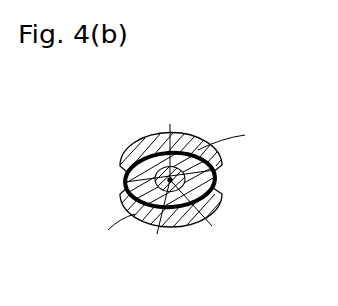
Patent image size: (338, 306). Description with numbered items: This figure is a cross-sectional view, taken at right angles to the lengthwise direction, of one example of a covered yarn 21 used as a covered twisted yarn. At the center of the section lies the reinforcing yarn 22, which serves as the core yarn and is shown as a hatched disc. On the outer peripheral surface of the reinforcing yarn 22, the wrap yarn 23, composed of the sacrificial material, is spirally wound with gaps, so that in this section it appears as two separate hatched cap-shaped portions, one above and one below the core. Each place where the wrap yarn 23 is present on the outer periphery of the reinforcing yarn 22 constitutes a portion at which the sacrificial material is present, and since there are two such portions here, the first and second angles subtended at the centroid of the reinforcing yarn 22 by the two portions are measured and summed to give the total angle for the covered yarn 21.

The covered yarn 21 is at (196, 99).
The reinforcing yarn 22 is at (134, 178).
The wrap yarn 23 is at (170, 165).